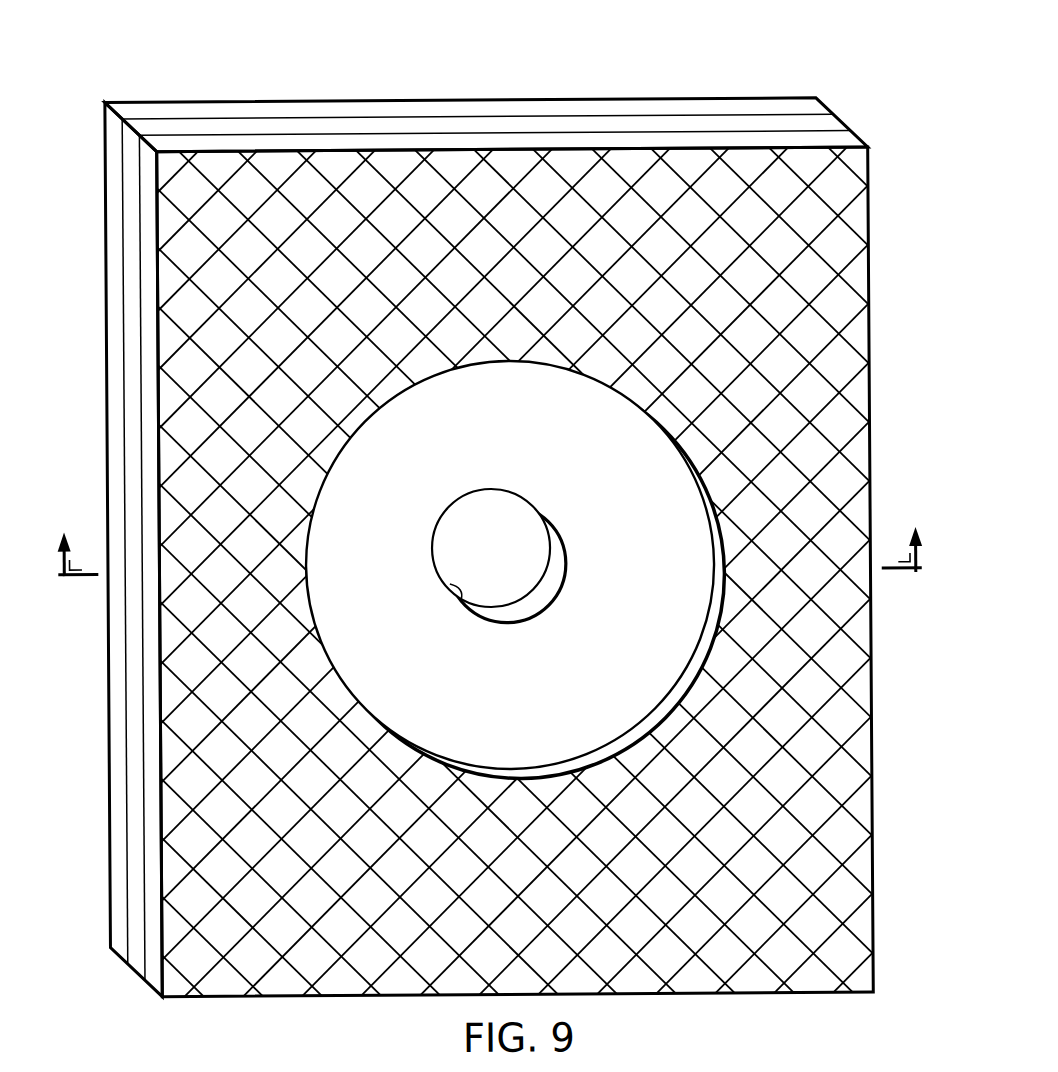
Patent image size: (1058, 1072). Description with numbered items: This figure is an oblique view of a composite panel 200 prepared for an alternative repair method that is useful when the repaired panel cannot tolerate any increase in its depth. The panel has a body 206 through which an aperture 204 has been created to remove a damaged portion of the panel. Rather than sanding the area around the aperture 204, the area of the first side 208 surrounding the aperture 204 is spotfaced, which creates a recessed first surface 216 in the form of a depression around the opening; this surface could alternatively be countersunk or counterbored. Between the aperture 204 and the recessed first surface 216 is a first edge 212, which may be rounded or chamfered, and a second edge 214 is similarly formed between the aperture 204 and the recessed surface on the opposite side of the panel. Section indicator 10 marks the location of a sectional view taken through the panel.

The composite panel 200 is at (499, 536).
The aperture 204 is at (530, 598).
The body 206 is at (667, 76).
The first side 208 is at (862, 748).
The first edge 212 is at (566, 556).
The second edge 214 is at (447, 586).
The recessed first surface 216 is at (542, 569).
The section line 10- 10 is at (490, 535).